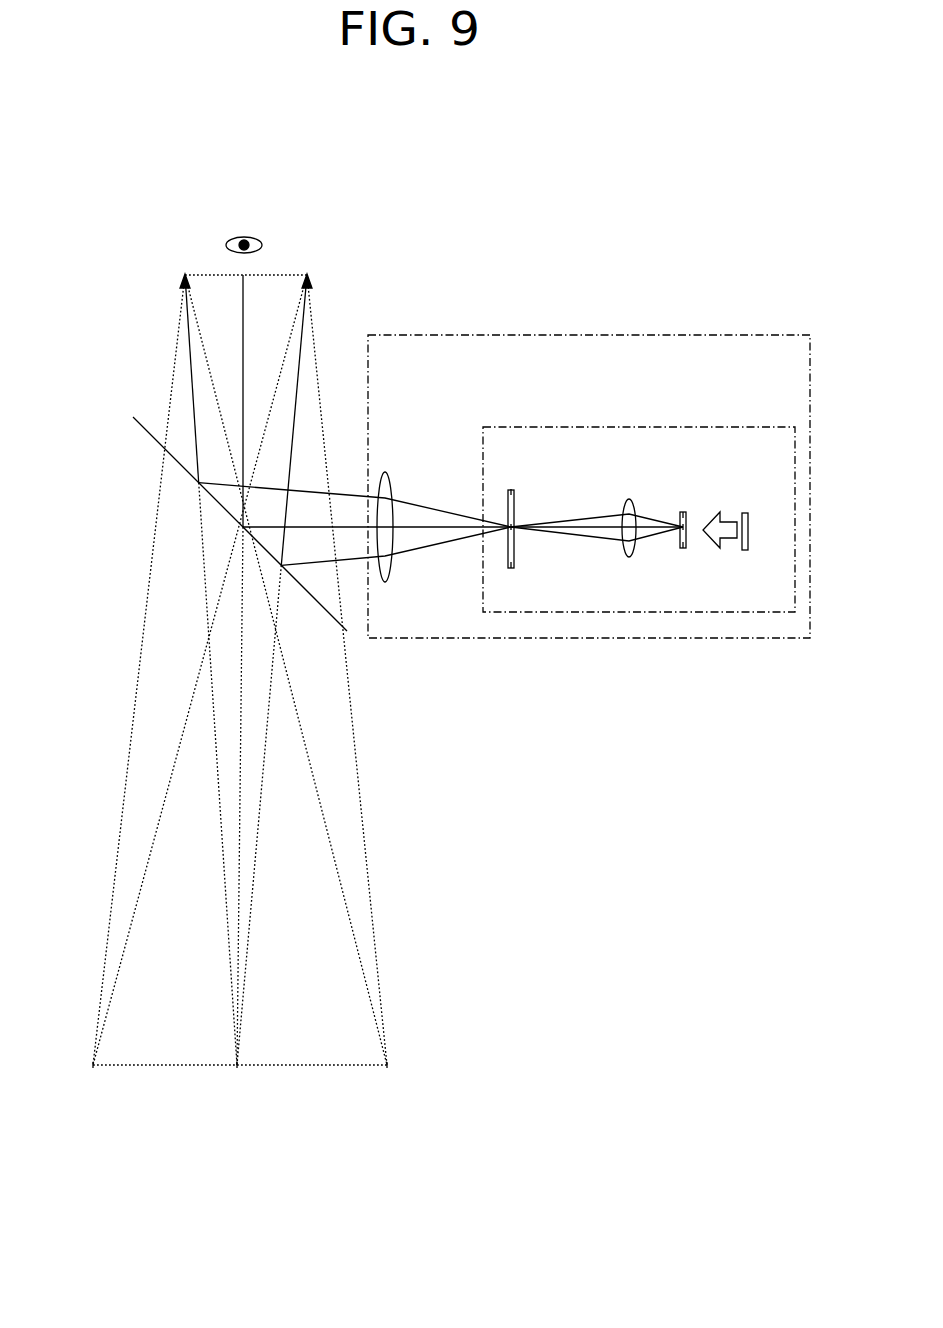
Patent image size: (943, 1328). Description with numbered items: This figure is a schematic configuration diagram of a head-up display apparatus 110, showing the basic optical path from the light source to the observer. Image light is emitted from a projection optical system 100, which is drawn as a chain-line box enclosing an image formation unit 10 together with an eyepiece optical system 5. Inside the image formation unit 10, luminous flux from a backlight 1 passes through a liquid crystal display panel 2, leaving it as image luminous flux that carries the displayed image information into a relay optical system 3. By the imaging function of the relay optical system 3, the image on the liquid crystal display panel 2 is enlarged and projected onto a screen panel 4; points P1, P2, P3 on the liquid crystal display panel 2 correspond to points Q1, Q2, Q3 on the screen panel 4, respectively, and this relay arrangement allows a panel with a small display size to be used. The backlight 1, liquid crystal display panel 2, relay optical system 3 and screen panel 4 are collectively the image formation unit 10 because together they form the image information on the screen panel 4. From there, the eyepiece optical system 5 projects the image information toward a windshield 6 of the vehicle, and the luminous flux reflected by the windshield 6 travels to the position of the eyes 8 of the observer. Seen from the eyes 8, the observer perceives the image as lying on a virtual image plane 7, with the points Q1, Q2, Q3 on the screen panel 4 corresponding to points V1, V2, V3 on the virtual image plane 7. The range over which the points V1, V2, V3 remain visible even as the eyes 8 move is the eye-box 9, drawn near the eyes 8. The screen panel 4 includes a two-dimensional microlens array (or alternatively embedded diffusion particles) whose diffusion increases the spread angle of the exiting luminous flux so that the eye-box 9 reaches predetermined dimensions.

The backlight 1 is at (745, 517).
The liquid crystal display panel 2 is at (677, 498).
The relay optical system 3 is at (620, 502).
The screen panel 4 is at (503, 501).
The eyepiece optical system 5 is at (403, 492).
The windshield 6 is at (216, 514).
The virtual image plane 7 is at (277, 1044).
The eyes 8 is at (254, 217).
The eye-box 9 is at (259, 256).
The image formation unit 10 is at (639, 489).
The projection optical system 100 is at (589, 448).
The head-up display apparatus 110 is at (589, 409).
The point P1 is at (703, 569).
The point P2 is at (703, 548).
The point P3 is at (701, 498).
The point Q1 is at (539, 482).
The point Q2 is at (539, 514).
The point Q3 is at (539, 560).
The point V1 is at (371, 1087).
The point V2 is at (223, 1087).
The point V3 is at (75, 1087).